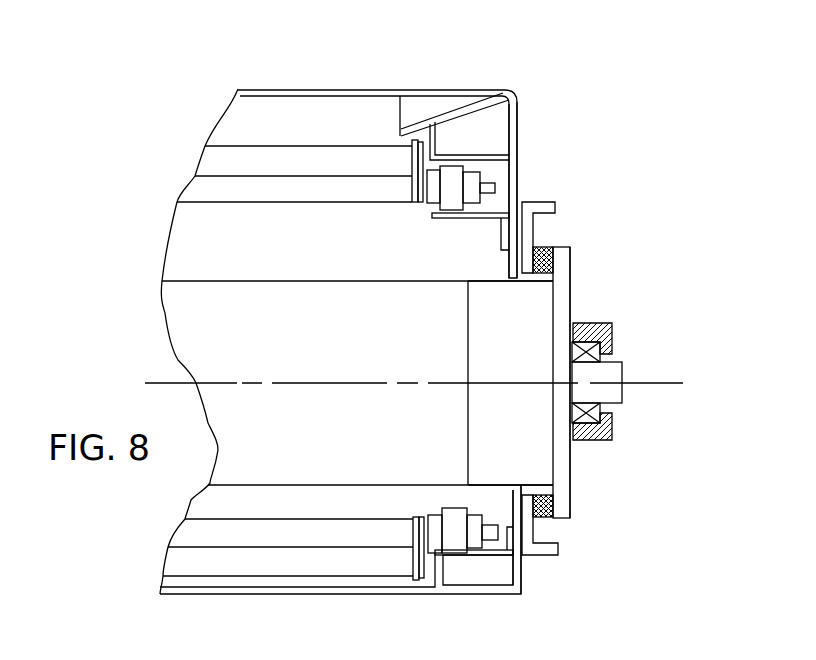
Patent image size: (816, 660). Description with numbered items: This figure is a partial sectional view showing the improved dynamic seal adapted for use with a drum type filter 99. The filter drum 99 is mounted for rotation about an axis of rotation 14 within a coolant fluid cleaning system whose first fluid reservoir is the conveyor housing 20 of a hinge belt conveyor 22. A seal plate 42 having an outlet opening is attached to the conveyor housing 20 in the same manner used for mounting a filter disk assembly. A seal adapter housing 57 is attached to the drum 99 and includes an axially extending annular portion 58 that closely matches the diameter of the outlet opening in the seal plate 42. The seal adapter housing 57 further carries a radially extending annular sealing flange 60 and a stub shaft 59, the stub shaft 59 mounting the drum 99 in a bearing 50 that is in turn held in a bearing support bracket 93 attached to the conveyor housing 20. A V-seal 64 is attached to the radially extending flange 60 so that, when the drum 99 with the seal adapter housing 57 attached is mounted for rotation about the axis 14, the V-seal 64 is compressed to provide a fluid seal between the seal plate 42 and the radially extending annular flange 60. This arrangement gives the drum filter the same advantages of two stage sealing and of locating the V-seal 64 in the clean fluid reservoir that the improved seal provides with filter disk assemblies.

The axis of rotation 14 is at (383, 383).
The conveyor housing 20 is at (518, 105).
The hinge belt conveyor 22 is at (518, 125).
The seal plate 42 is at (538, 202).
The bearing 50 is at (600, 355).
The seal adapter housing 57 is at (570, 302).
The axially extending annular portion 58 is at (497, 292).
The stub shaft 59 is at (622, 370).
The radially extending annular sealing flange 60 is at (570, 273).
The V-seal 64 is at (548, 247).
The bearing support bracket 93 is at (608, 440).
The drum type filter 99 is at (332, 292).